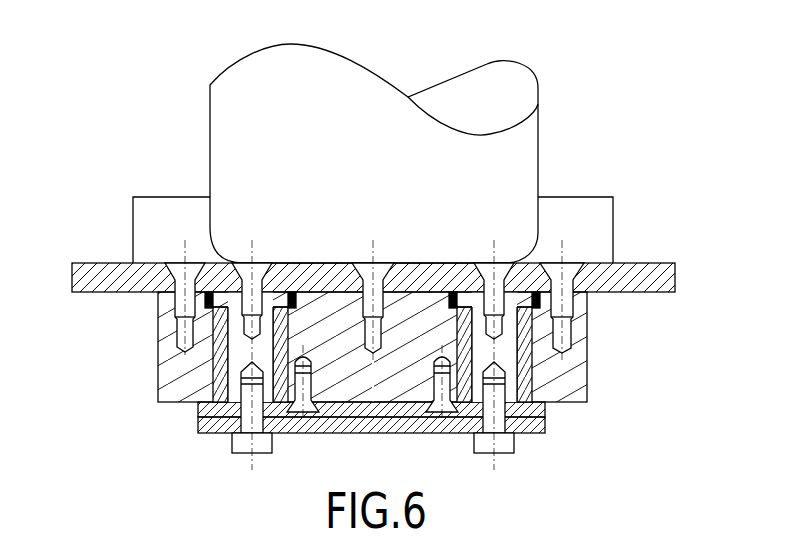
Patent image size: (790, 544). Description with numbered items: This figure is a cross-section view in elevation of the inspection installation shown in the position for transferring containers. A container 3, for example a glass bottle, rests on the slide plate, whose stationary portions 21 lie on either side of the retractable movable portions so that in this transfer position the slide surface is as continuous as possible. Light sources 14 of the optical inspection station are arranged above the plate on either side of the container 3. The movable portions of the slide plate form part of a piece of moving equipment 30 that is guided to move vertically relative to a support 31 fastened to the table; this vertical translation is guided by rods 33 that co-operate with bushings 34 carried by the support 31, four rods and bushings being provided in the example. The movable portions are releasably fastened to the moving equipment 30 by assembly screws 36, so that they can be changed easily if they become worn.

The container 3 is at (343, 80).
The light source 14 is at (165, 209).
The stationary portions 21 is at (93, 277).
The moving equipment 30 is at (347, 433).
The support 31 is at (575, 362).
The rod 33 is at (168, 375).
The bushing 34 is at (528, 370).
The assembly screws 36 is at (505, 262).